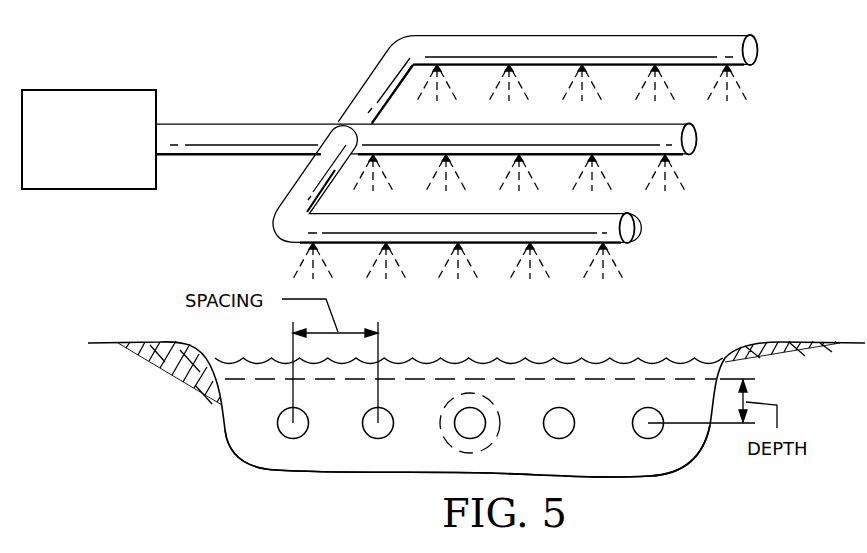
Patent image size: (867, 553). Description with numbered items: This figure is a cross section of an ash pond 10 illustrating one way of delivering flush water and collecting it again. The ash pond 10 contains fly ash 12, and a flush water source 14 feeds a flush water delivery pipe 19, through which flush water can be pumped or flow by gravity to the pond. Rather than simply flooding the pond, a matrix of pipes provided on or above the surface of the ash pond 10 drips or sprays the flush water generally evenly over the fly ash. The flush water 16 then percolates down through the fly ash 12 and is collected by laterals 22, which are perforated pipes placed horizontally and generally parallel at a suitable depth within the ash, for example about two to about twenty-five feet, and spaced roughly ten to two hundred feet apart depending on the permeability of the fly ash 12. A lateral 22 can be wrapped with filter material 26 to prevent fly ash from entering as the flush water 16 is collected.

The ash pond 10 is at (740, 313).
The fly ash 12 is at (282, 461).
The flush water source 14 is at (88, 89).
The flush water 16 is at (626, 372).
The flush water delivery pipe 19 is at (248, 122).
The laterals 22 is at (634, 429).
The filter material 26 is at (485, 397).